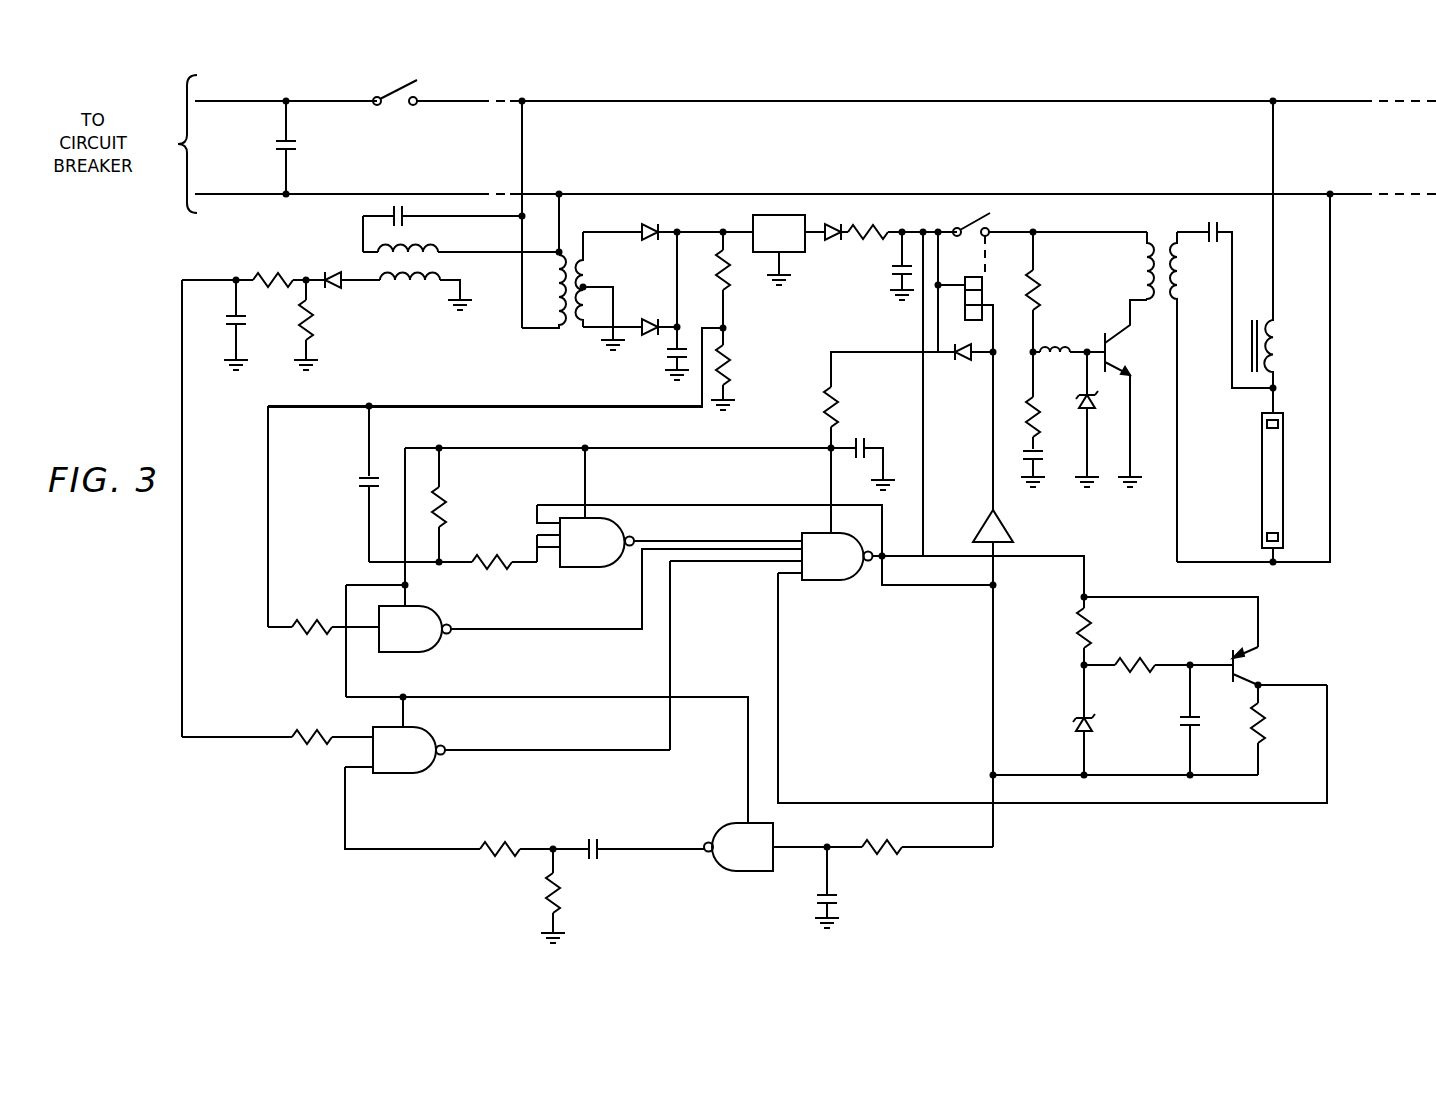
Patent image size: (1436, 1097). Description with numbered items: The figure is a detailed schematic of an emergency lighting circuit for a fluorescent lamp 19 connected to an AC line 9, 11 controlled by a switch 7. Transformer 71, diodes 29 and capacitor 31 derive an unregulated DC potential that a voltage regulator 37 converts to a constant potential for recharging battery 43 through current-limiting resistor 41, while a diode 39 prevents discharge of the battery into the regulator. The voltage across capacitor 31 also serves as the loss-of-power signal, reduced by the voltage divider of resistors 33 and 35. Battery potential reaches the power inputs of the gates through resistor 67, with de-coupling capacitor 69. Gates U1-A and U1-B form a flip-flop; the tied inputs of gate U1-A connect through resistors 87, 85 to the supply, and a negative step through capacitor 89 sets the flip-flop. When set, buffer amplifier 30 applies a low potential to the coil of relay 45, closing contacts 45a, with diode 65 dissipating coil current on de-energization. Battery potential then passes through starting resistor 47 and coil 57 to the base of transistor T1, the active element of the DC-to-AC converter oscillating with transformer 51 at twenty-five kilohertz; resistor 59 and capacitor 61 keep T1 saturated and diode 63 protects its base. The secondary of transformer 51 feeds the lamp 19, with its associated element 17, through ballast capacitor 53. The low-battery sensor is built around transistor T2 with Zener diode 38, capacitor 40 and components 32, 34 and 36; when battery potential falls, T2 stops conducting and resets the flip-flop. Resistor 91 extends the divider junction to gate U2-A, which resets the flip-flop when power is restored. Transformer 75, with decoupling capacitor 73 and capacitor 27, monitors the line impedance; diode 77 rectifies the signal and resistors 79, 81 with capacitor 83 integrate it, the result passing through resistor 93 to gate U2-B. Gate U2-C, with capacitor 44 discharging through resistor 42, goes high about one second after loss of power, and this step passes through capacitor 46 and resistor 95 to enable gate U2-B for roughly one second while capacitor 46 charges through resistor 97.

The switch 7 is at (395, 88).
The line 9 is at (262, 98).
The line 11 is at (238, 184).
The ballast inductor 17 is at (1276, 342).
The fluorescent lamp 19 is at (1284, 494).
The capacitor 27 is at (303, 147).
The diodes 29 is at (650, 240).
The buffer amplifier 30 is at (1012, 530).
The capacitor 31 is at (660, 356).
The resistor 32 is at (1076, 628).
The resistor 33 is at (730, 288).
The resistor 34 is at (1266, 728).
The resistor 35 is at (736, 358).
The resistor 36 is at (1150, 658).
The voltage regulator 37 is at (746, 222).
The Zener diode 38 is at (1070, 732).
The diode 39 is at (834, 248).
The capacitor 40 is at (1204, 720).
The resistor 41 is at (882, 222).
The resistor 42 is at (891, 856).
The battery 43 is at (884, 273).
The capacitor 44 is at (842, 900).
The relay 45 is at (985, 286).
The relay contacts 45a is at (996, 216).
The capacitor 46 is at (598, 834).
The starting resistor 47 is at (1042, 285).
The transformer 51 is at (1160, 240).
The capacitor 53 is at (1212, 224).
The coil 57 is at (1058, 346).
The resistor 59 is at (1027, 408).
The capacitor 61 is at (1066, 446).
The diode 63 is at (1096, 397).
The diode 65 is at (968, 366).
The resistor 67 is at (820, 396).
The de-coupling capacitor 69 is at (864, 436).
The transformer 71 is at (572, 334).
The decoupling capacitor 73 is at (404, 228).
The transformer 75 is at (366, 260).
The diode 77 is at (332, 286).
The resistor 79 is at (298, 324).
The resistor 81 is at (283, 276).
The capacitor 83 is at (224, 322).
The resistor 85 is at (444, 506).
The resistor 87 is at (492, 552).
The capacitor 89 is at (354, 476).
The resistor 91 is at (306, 612).
The resistor 93 is at (314, 730).
The resistor 95 is at (514, 836).
The resistor 97 is at (534, 904).
The transistor T1 is at (1120, 348).
The transistor T2 is at (1262, 660).
The NAND gate U1-A is at (564, 572).
The NAND gate U1-B is at (822, 582).
The gate U2-A is at (434, 613).
The NAND gate U2-B is at (430, 731).
The gate U2-C is at (716, 826).